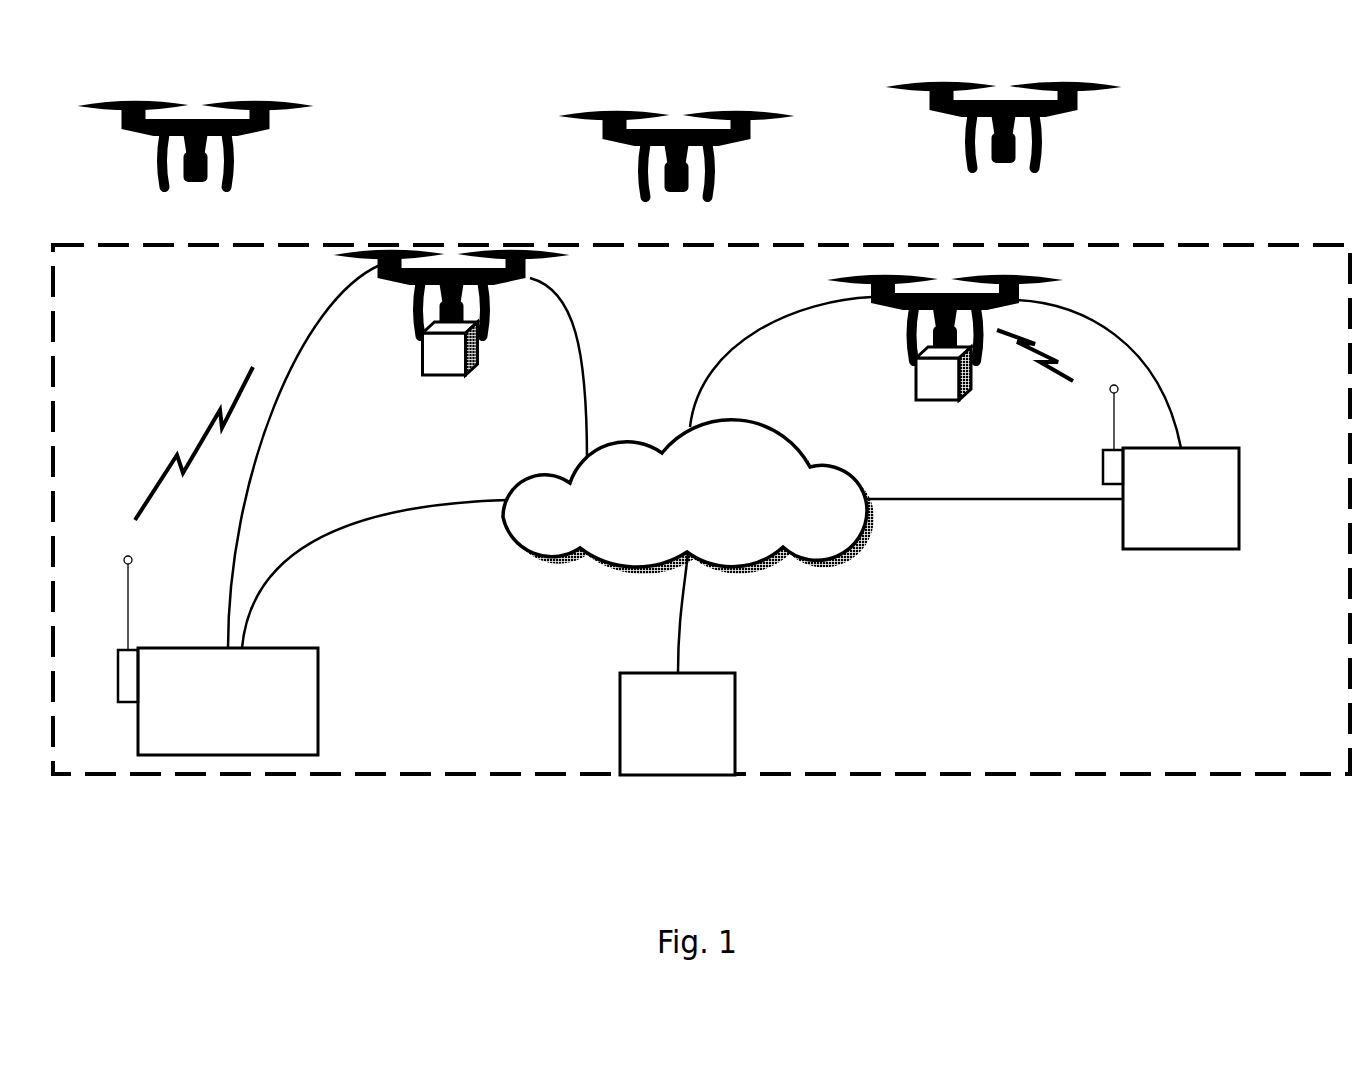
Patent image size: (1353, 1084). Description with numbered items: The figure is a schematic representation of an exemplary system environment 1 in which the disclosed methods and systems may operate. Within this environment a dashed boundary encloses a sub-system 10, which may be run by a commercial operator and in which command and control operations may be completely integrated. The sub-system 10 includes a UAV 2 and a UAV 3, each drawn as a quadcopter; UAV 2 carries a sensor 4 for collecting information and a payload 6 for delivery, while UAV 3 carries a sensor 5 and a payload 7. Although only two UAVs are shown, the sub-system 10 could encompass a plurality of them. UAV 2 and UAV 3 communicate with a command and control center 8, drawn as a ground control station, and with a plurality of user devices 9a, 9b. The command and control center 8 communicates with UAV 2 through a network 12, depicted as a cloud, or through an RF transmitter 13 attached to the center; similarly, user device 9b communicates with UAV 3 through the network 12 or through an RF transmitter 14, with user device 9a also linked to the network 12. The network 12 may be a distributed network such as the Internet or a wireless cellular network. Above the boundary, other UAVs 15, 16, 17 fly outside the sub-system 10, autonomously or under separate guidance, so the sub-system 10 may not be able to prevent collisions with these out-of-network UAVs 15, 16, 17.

The system environment 1 is at (895, 764).
The UAV 2 is at (497, 253).
The UAV 3 is at (987, 277).
The sensor 4 is at (443, 322).
The sensor 5 is at (910, 345).
The payload 6 is at (447, 375).
The payload 7 is at (938, 398).
The command and control center 8 is at (318, 702).
The user device 9a is at (620, 723).
The user device 9b is at (1239, 499).
The sub-system 10 is at (1149, 715).
The network 12 is at (587, 557).
The RF transmitter 13 is at (118, 677).
The RF transmitter 14 is at (1103, 469).
The other UAV 15 is at (277, 102).
The other UAV 16 is at (890, 85).
The other UAV 17 is at (610, 112).